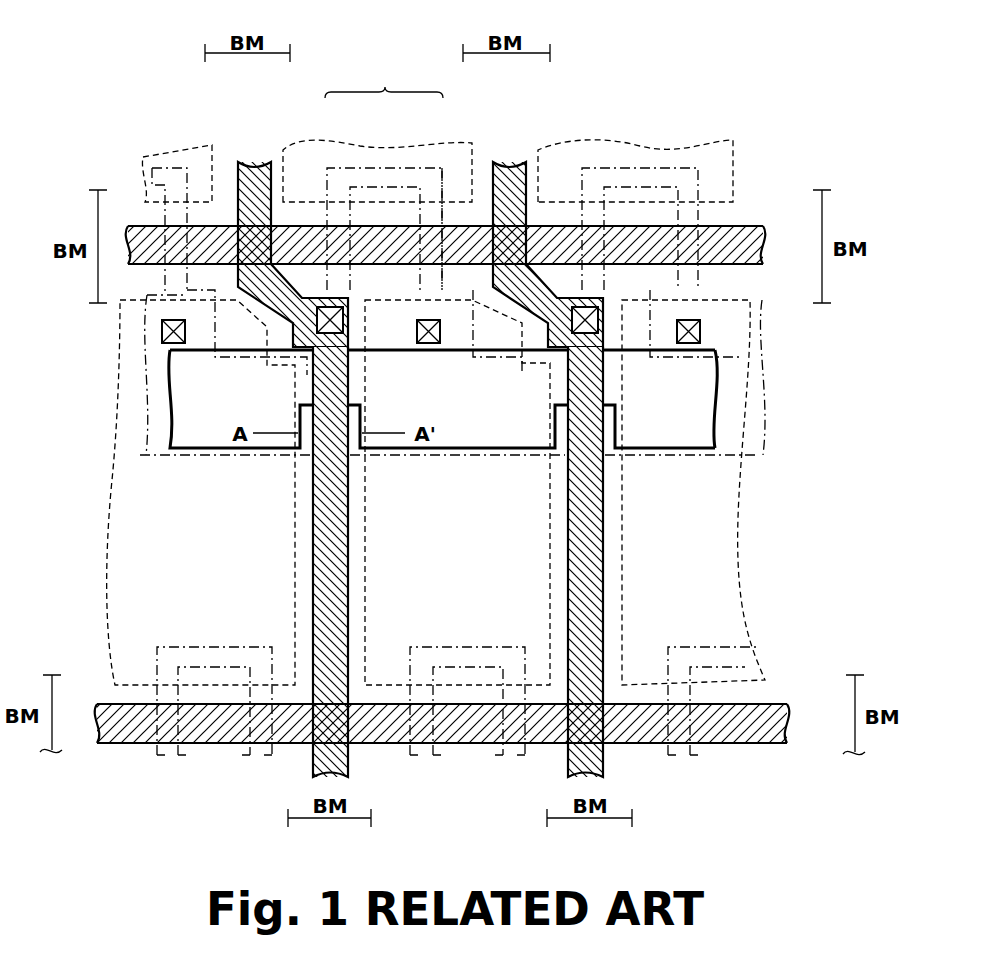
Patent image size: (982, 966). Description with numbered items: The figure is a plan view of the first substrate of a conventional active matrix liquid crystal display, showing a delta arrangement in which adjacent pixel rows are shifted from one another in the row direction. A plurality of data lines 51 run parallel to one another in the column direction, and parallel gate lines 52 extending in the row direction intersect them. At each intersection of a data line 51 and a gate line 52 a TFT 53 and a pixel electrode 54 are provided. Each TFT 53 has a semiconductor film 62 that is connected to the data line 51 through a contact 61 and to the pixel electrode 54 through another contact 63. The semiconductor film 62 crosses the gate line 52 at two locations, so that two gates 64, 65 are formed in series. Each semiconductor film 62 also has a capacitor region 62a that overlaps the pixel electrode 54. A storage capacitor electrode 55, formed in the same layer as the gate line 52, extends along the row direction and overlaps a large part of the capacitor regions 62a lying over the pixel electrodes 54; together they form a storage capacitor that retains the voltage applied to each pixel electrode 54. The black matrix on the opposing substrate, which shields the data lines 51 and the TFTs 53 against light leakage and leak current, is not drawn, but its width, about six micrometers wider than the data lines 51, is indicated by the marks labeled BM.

The data line 51 is at (256, 163).
The gate line 52 is at (763, 237).
The TFT 53 is at (384, 81).
The pixel electrode 54 is at (120, 580).
The storage capacitor electrode 55 is at (730, 365).
The contact 61 is at (328, 308).
The semiconductor film 62 is at (372, 180).
The capacitor region 62a is at (148, 428).
The contact 63 is at (174, 346).
The gate 64 is at (342, 223).
The gate 65 is at (433, 223).